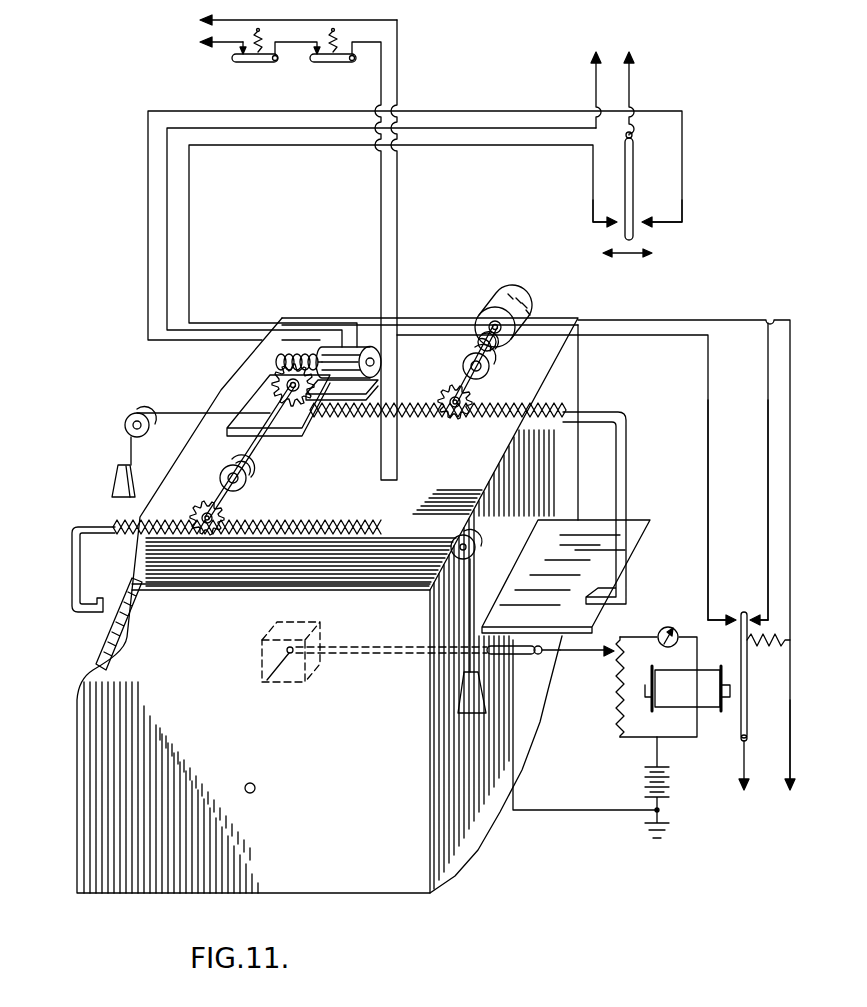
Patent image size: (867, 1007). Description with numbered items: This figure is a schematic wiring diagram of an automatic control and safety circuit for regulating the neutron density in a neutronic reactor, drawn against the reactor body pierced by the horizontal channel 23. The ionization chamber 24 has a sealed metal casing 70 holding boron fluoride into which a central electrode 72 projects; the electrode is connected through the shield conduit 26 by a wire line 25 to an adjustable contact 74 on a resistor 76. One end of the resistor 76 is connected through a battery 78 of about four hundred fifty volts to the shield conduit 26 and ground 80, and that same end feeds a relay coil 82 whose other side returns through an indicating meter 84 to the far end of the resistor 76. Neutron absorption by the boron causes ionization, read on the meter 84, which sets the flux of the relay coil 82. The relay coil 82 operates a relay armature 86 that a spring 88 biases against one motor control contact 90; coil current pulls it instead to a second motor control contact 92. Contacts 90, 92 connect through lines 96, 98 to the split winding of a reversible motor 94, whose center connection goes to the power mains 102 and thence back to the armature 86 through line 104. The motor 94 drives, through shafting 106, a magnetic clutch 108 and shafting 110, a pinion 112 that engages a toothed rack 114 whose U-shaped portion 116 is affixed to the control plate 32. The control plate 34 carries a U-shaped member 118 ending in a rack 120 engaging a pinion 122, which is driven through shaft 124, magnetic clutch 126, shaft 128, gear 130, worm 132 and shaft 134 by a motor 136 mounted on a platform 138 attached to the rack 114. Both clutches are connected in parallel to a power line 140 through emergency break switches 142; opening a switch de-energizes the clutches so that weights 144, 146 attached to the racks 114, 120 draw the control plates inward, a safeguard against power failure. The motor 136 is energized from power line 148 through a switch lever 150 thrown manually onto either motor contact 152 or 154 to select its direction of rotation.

The horizontal channel 23 is at (255, 784).
The ionization chamber 24 is at (256, 669).
The wire line 25 is at (537, 656).
The shield conduit 26 is at (362, 648).
The control plate 32 is at (632, 530).
The control plate 34 is at (108, 637).
The sealed metal casing 70 is at (299, 684).
The central electrode 72 is at (272, 684).
The adjustable contact 74 is at (608, 654).
The resistor 76 is at (616, 728).
The battery 78 is at (645, 780).
The ground 80 is at (650, 829).
The relay coil 82 is at (680, 707).
The indicating meter 84 is at (668, 627).
The relay armature 86 is at (748, 710).
The spring 88 is at (768, 646).
The motor control contact 90 is at (762, 618).
The second motor control contact 92 is at (730, 617).
The reversible motor 94 is at (524, 300).
The line 96 is at (709, 509).
The line 98 is at (767, 524).
The power mains 102 is at (767, 764).
The line 104 is at (741, 763).
The shafting 106 is at (478, 334).
The magnetic clutch 108 is at (490, 368).
The shafting 110 is at (462, 374).
The pinion 112 is at (470, 396).
The toothed rack 114 is at (462, 420).
The U-shaped portion 116 is at (624, 462).
The U-shaped member 118 is at (71, 596).
The rack 120 is at (340, 521).
The pinion 122 is at (222, 513).
The shaft 124 is at (244, 488).
The magnetic clutch 126 is at (250, 470).
The shaft 128 is at (262, 450).
The gear 130 is at (270, 380).
The worm 132 is at (276, 360).
The shaft 134 is at (336, 347).
The motor 136 is at (362, 345).
The platform 138 is at (298, 437).
The power line 140 is at (274, 31).
The emergency break switches 142 is at (316, 64).
The weight 144 is at (115, 483).
The weight 146 is at (470, 716).
The power line 148 is at (614, 79).
The switch lever 150 is at (634, 178).
The motor contact 152 is at (612, 227).
The motor contact 154 is at (645, 236).